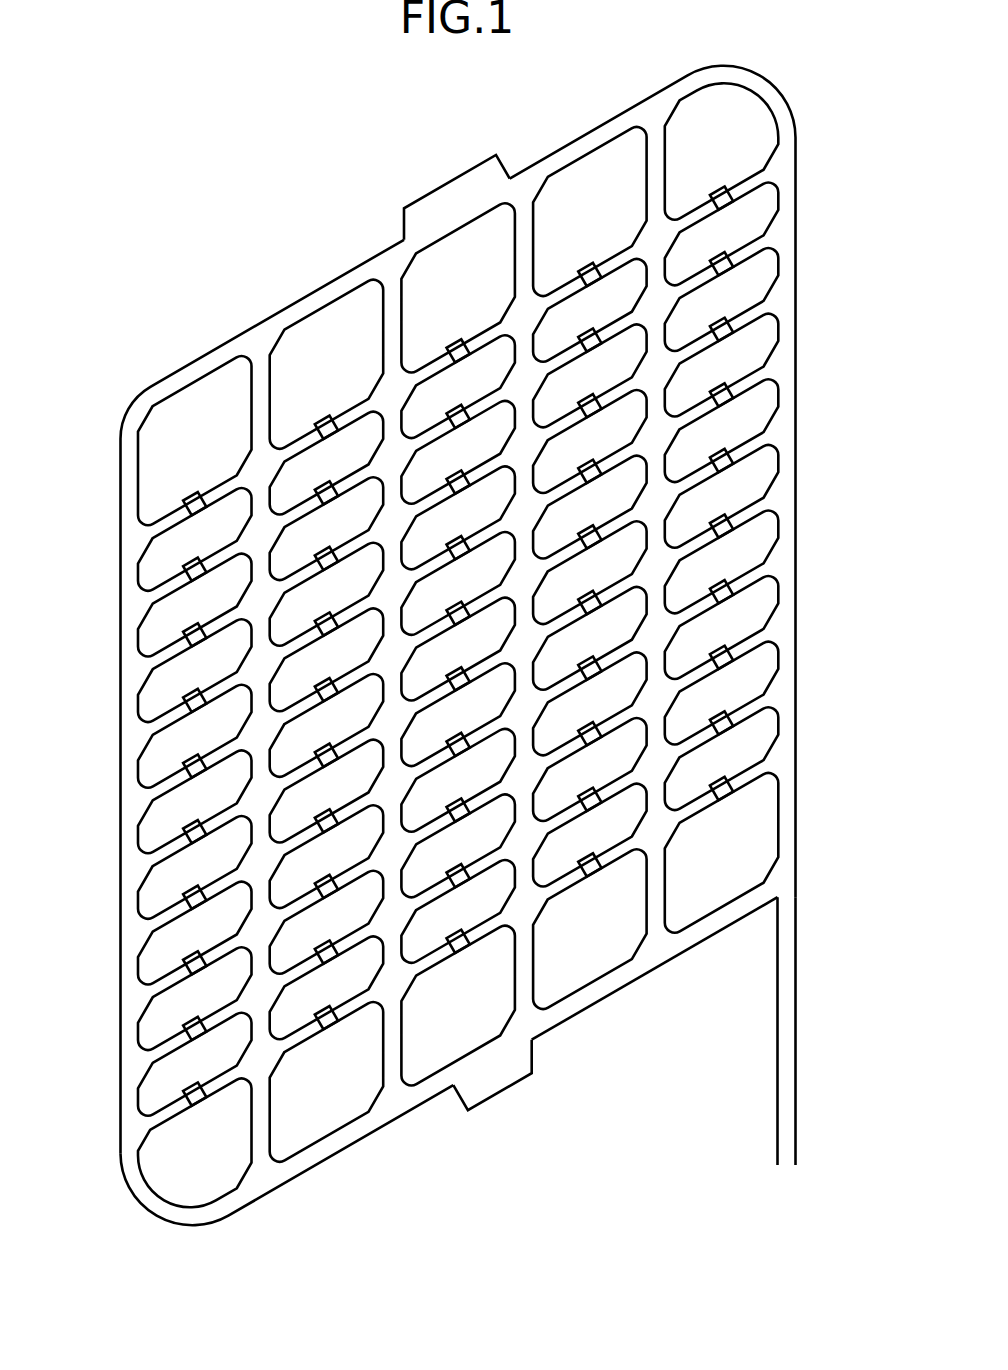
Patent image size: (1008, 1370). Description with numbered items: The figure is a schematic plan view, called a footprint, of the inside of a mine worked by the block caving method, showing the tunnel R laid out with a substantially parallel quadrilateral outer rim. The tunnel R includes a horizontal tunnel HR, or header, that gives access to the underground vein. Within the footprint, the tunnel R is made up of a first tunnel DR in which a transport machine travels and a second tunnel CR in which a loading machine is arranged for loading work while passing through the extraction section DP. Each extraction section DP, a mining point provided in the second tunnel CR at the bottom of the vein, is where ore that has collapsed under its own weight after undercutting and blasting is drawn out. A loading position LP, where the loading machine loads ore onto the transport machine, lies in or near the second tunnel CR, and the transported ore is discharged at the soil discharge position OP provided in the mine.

The tunnel R is at (797, 853).
The horizontal tunnel HR is at (777, 1050).
The soil discharge position OP is at (444, 184).
The first tunnel DR is at (304, 306).
The extraction section DP is at (327, 426).
The second tunnel CR is at (698, 476).
The loading position LP is at (667, 485).